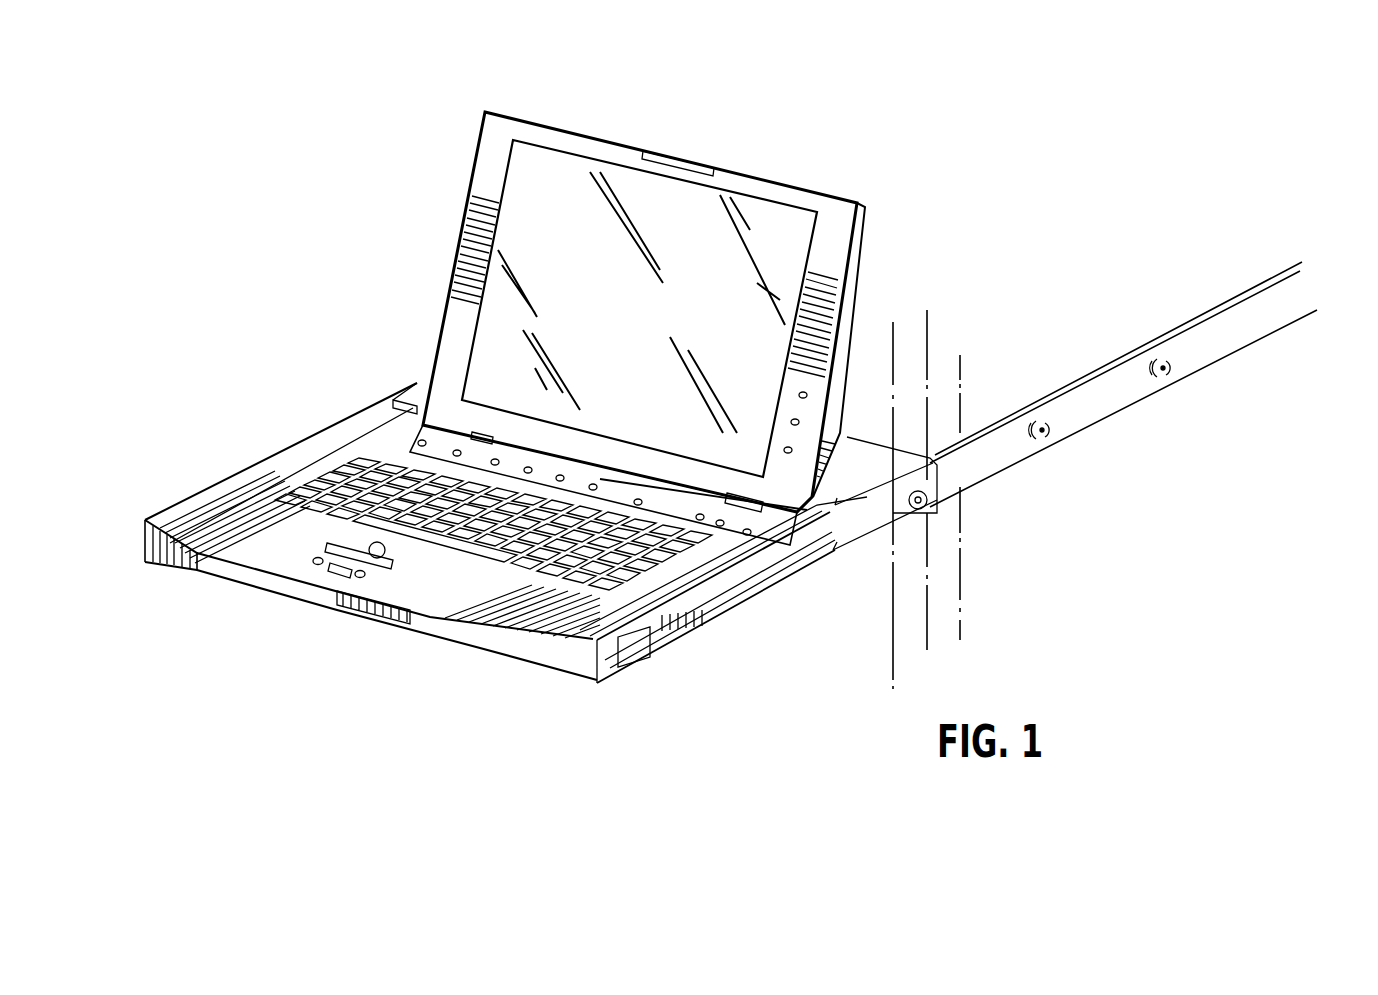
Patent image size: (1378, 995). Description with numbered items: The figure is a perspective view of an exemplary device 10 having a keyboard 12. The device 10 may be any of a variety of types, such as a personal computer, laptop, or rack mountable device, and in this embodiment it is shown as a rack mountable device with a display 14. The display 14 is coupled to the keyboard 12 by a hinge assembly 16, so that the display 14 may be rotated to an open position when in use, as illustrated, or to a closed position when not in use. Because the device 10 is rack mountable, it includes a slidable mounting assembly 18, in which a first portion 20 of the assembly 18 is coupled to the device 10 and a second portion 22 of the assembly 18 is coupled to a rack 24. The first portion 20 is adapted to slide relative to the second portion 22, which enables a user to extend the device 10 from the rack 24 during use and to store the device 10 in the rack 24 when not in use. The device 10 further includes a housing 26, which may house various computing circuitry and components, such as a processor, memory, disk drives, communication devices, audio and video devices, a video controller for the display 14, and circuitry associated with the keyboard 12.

The device 10 is at (962, 207).
The keyboard 12 is at (237, 465).
The display 14 is at (566, 125).
The hinge assembly 16 is at (460, 422).
The slidable mounting assembly 18 is at (818, 606).
The first portion 20 is at (645, 664).
The second portion 22 is at (1050, 447).
The rack 24 is at (958, 387).
The housing 26 is at (855, 455).